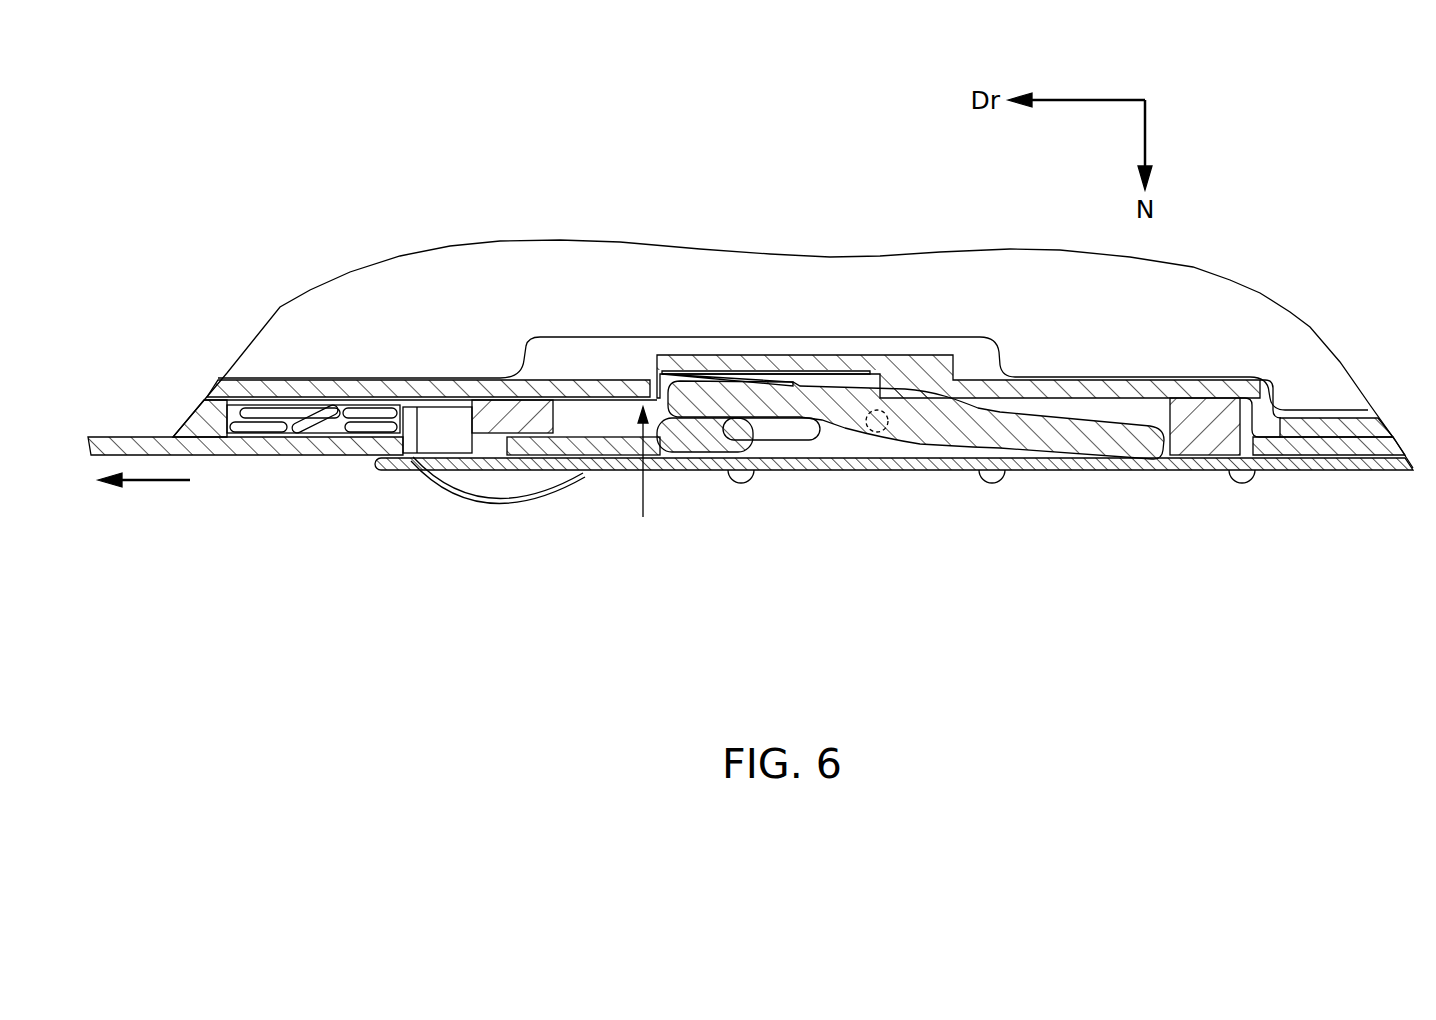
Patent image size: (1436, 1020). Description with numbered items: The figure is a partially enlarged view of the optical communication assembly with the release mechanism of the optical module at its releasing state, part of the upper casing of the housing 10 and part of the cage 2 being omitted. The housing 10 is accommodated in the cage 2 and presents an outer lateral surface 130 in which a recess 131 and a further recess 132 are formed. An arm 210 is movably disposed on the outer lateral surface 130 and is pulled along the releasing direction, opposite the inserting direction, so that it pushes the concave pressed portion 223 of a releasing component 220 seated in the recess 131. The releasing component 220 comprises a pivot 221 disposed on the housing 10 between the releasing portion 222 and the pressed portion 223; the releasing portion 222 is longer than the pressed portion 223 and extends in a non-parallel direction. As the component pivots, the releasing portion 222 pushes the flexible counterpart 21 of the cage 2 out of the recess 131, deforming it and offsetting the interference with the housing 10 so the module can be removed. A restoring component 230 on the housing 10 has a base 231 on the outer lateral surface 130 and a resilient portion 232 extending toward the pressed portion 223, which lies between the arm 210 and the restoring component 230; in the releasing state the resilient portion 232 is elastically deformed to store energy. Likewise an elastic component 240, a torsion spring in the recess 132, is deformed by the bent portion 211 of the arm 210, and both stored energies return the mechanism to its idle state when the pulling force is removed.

The cage 2 is at (1328, 465).
The housing 10 is at (431, 394).
The flexible counterpart 21 is at (1080, 462).
The outer lateral surface 130 is at (580, 398).
The recess 131 is at (641, 481).
The recess 132 is at (225, 422).
The arm 210 is at (594, 446).
The bent portion 211 is at (410, 422).
The releasing component 220 is at (915, 487).
The pivot 221 is at (875, 432).
The releasing portion 222 is at (1065, 476).
The pressed portion 223 is at (697, 398).
The restoring component 230 is at (958, 274).
The base 231 is at (829, 372).
The resilient portion 232 is at (766, 380).
The elastic component 240 is at (318, 428).